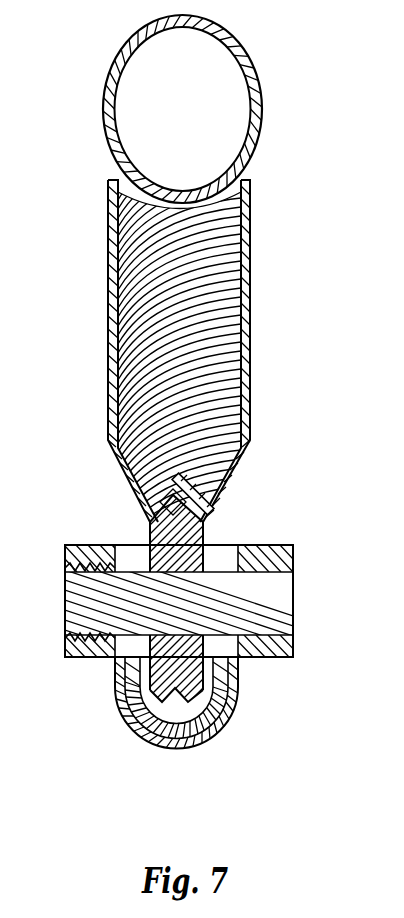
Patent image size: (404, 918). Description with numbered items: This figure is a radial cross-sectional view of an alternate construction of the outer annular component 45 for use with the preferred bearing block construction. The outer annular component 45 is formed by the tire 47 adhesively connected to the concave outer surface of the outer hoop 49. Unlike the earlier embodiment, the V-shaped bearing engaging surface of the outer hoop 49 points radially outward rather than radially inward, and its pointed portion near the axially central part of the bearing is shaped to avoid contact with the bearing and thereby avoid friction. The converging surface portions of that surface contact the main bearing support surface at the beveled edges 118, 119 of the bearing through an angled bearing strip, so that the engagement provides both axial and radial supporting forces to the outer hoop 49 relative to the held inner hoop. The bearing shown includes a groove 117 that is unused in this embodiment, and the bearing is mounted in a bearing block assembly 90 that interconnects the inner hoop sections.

The tire 47 is at (230, 122).
The outer annular component 45 is at (272, 292).
The outer hoop 49 is at (98, 333).
The bearing block assembly 90 is at (310, 623).
The beveled edge 118 is at (133, 730).
The beveled edge 119 is at (215, 715).
The groove 117 is at (177, 698).